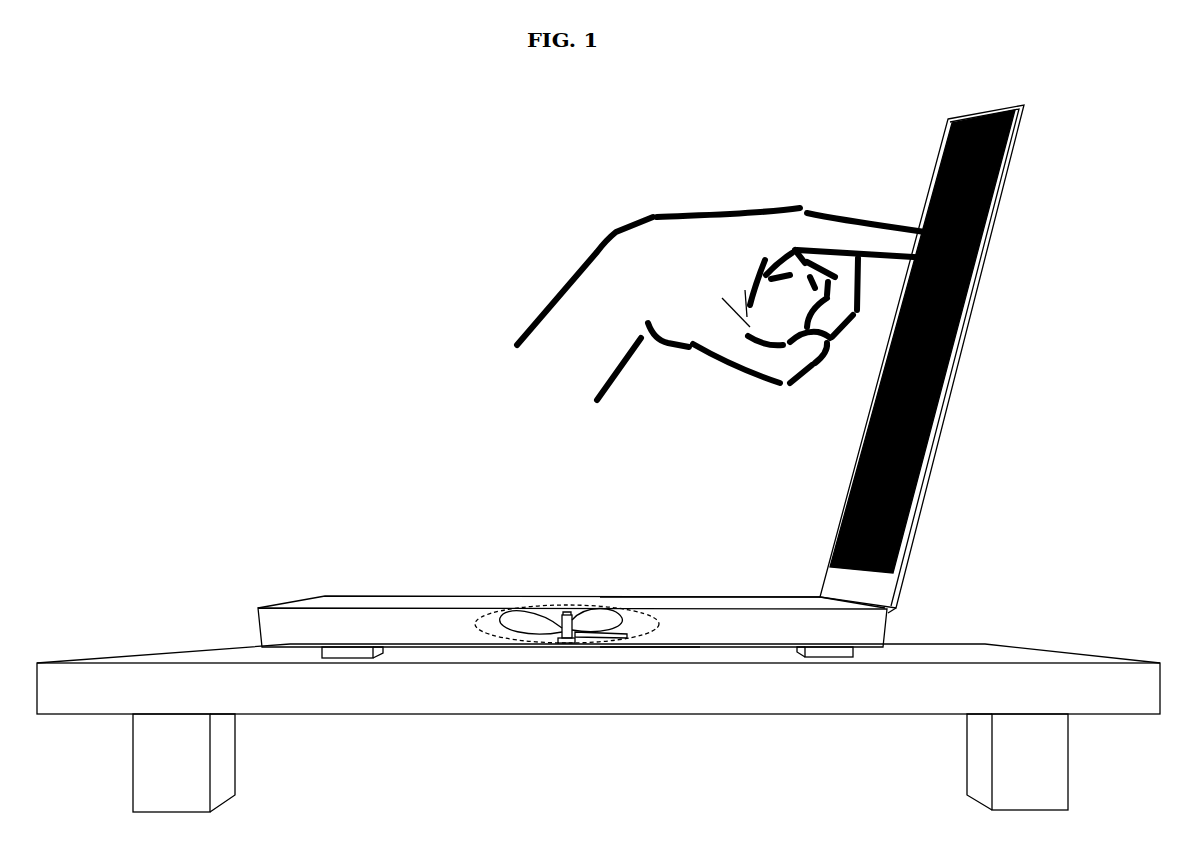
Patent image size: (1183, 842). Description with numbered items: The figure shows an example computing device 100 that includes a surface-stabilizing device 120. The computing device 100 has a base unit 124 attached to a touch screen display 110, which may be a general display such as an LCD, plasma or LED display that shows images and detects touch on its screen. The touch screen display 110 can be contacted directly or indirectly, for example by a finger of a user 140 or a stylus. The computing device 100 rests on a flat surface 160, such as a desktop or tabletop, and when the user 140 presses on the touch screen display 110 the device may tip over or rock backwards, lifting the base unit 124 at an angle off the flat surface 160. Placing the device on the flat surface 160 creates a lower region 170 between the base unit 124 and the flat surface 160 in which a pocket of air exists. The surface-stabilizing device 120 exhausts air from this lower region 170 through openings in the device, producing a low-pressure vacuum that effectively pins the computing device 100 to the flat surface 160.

The computing device 100 is at (325, 596).
The touch screen display 110 is at (914, 135).
The surface-stabilizing device 120 is at (530, 597).
The base unit 124 is at (745, 596).
The user 140 is at (612, 212).
The flat surface 160 is at (1009, 646).
The lower region 170 is at (662, 654).